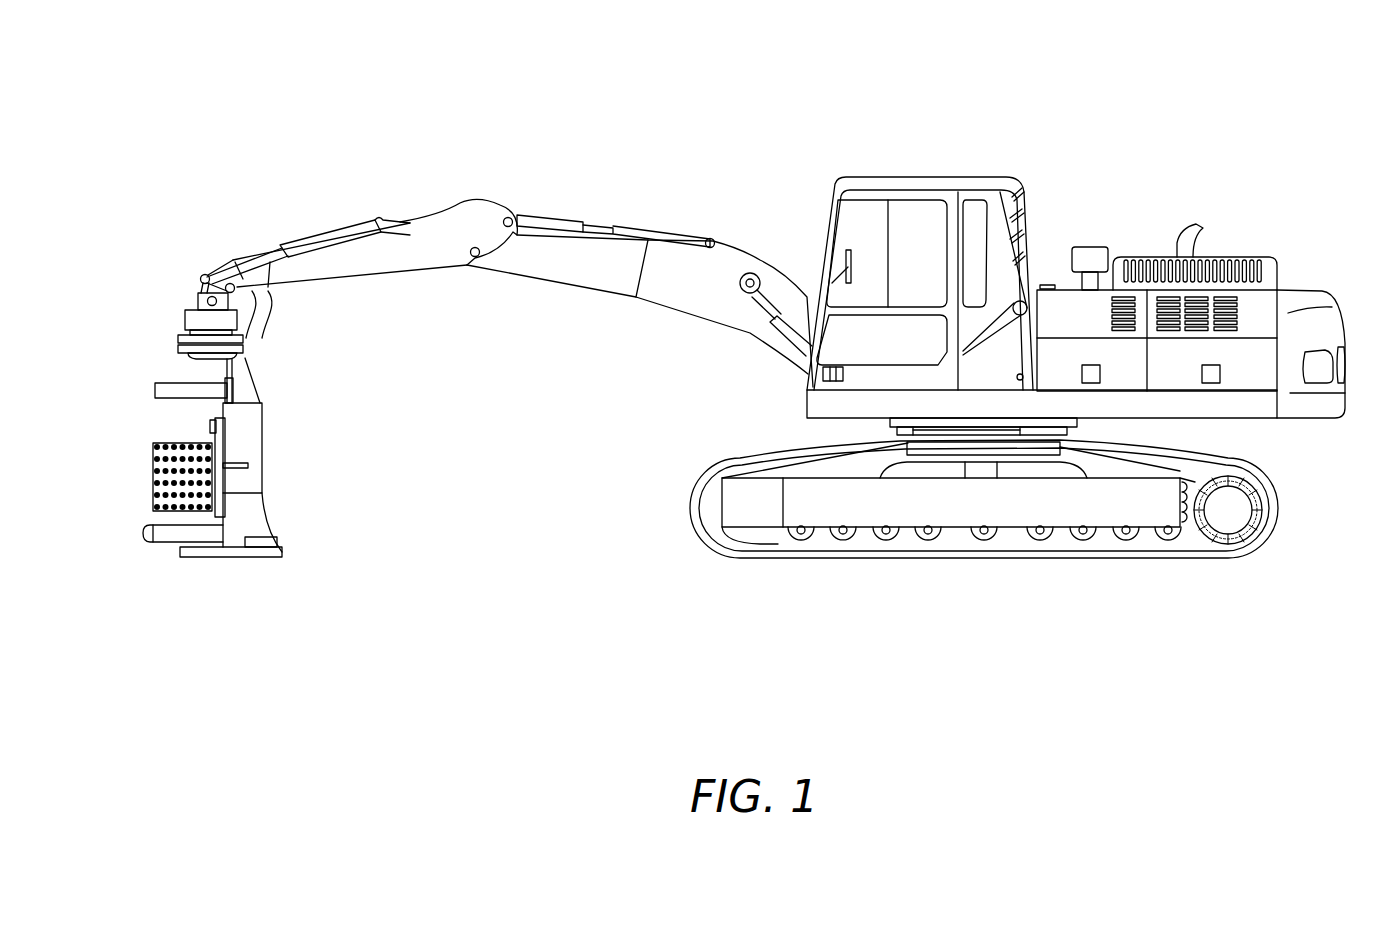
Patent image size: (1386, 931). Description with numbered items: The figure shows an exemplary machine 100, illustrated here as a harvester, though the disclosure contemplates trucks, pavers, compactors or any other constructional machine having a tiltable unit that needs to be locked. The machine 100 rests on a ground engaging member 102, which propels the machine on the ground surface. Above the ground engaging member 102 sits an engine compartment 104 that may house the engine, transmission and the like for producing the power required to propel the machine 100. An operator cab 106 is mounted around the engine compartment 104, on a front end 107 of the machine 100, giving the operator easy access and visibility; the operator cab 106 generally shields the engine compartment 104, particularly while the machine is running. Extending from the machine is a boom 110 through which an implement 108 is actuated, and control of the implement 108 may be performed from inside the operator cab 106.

The machine 100 is at (256, 102).
The ground engaging member 102 is at (943, 562).
The engine compartment 104 is at (1338, 290).
The operator cab 106 is at (895, 170).
The front end 107 is at (778, 397).
The implement 108 is at (157, 357).
The boom 110 is at (517, 298).